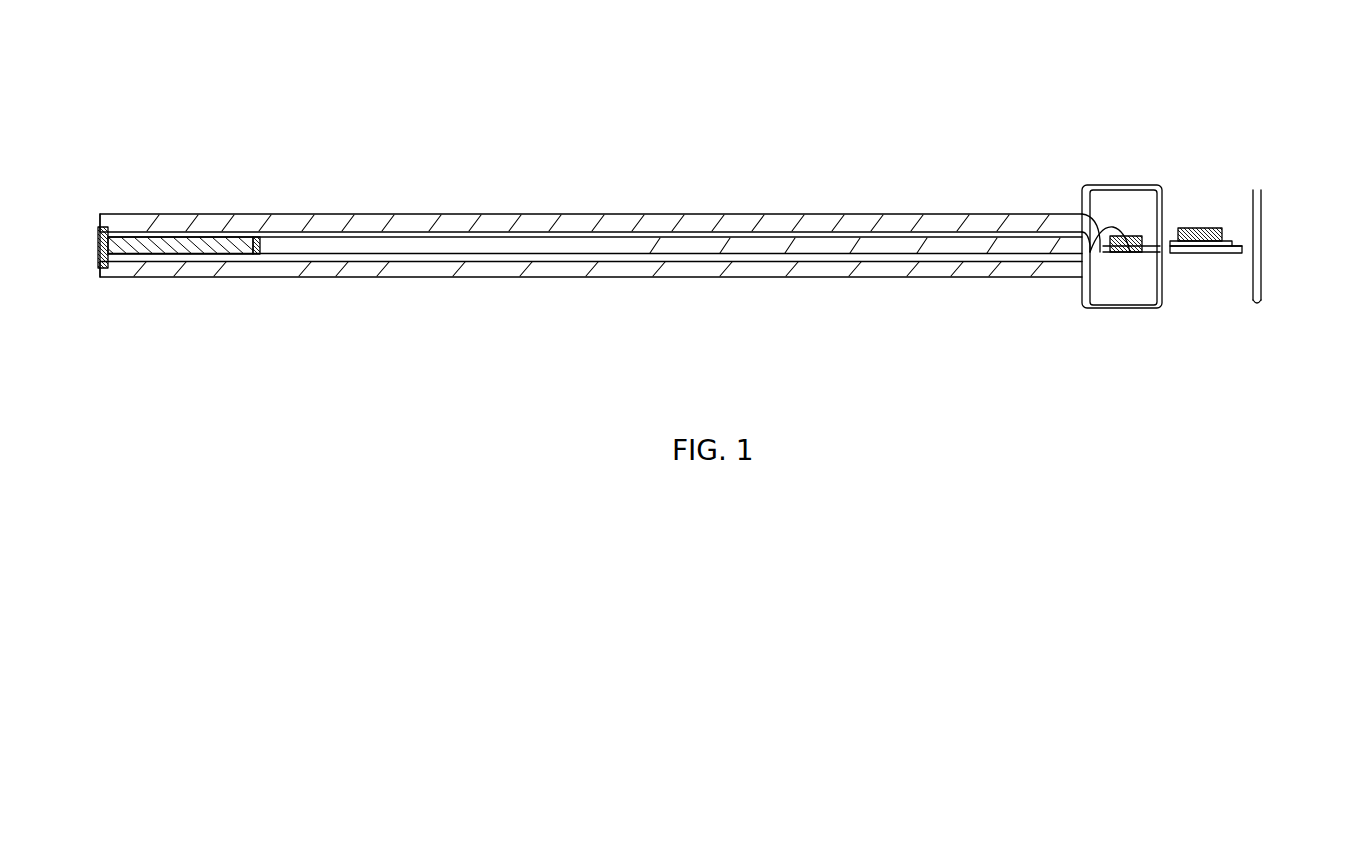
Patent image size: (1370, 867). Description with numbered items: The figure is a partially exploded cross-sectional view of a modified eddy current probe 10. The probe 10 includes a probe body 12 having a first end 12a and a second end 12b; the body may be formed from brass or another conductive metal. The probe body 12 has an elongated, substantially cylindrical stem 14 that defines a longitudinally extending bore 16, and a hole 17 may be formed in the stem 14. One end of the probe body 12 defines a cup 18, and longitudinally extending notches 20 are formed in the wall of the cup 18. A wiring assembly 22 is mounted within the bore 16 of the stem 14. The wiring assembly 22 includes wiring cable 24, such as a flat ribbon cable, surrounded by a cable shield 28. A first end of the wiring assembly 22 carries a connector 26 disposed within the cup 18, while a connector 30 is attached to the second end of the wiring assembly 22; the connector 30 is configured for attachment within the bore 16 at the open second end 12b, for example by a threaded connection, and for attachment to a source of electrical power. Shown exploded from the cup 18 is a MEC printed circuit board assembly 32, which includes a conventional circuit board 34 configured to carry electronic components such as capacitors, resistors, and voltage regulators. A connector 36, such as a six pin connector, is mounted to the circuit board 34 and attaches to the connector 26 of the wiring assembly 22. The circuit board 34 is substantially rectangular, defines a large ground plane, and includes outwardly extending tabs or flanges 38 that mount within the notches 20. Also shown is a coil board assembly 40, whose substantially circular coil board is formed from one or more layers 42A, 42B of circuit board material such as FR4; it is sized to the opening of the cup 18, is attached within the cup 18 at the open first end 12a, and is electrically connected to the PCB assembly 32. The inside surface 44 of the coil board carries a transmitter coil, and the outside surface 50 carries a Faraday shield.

The modified eddy current probe 10 is at (716, 254).
The probe body 12 is at (631, 224).
The first end 12a is at (1125, 163).
The second end 12b is at (130, 181).
The stem 14 is at (591, 167).
The bore 16 is at (591, 310).
The hole 17 is at (595, 303).
The cup 18 is at (1115, 165).
The notches 20 is at (1119, 310).
The wiring assembly 22 is at (595, 174).
The wiring cable 24 is at (190, 304).
The connector 26 is at (1071, 314).
The cable shield 28 is at (855, 187).
The connector 30 is at (115, 294).
The MEC printed circuit board assembly 32 is at (1205, 189).
The circuit board 34 is at (1176, 336).
The connector 36 is at (1201, 141).
The tabs or flanges 38 is at (1191, 366).
The coil board assembly 40 is at (1273, 237).
The layer 42A is at (1233, 190).
The layer 42B is at (1299, 199).
The inside surface 44 is at (1216, 358).
The outside surface 50 is at (1291, 361).